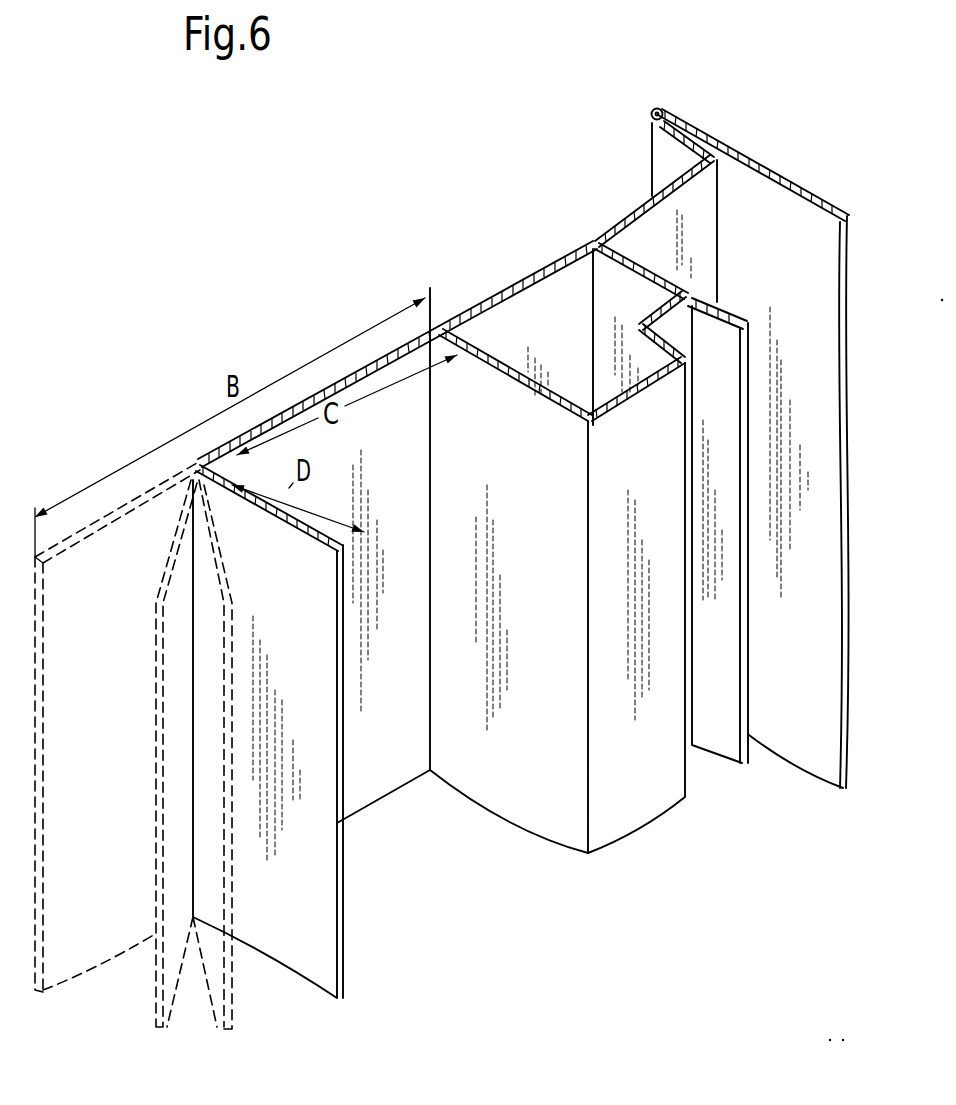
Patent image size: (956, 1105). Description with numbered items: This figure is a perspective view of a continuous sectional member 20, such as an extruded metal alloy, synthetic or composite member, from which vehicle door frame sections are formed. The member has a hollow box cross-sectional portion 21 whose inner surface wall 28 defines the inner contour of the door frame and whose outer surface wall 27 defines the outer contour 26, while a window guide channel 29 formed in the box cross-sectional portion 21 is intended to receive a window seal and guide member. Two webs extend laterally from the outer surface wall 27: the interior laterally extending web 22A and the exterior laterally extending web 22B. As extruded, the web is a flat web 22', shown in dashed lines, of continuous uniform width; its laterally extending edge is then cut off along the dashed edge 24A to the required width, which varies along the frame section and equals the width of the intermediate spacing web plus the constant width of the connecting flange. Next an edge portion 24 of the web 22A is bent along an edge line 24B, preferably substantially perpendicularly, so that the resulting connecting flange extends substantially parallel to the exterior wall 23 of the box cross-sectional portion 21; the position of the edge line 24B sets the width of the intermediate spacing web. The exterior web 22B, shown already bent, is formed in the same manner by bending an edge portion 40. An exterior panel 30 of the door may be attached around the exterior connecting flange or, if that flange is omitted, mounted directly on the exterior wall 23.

The continuous sectional member 20 is at (374, 290).
The box cross-sectional portion 21 is at (565, 287).
The interior laterally extending web 22A is at (302, 403).
The exterior laterally extending web 22B is at (642, 192).
The flat web 22' is at (117, 656).
The exterior wall 23 is at (701, 150).
The edge portion 24 is at (310, 938).
The dashed edge 24A is at (50, 598).
The edge line 24B is at (182, 540).
The outer contour 26 is at (470, 292).
The outer surface wall 27 is at (516, 272).
The inner surface wall 28 is at (641, 330).
The window guide channel 29 is at (716, 335).
The exterior panel 30 is at (800, 188).
The edge portion 40 is at (662, 117).